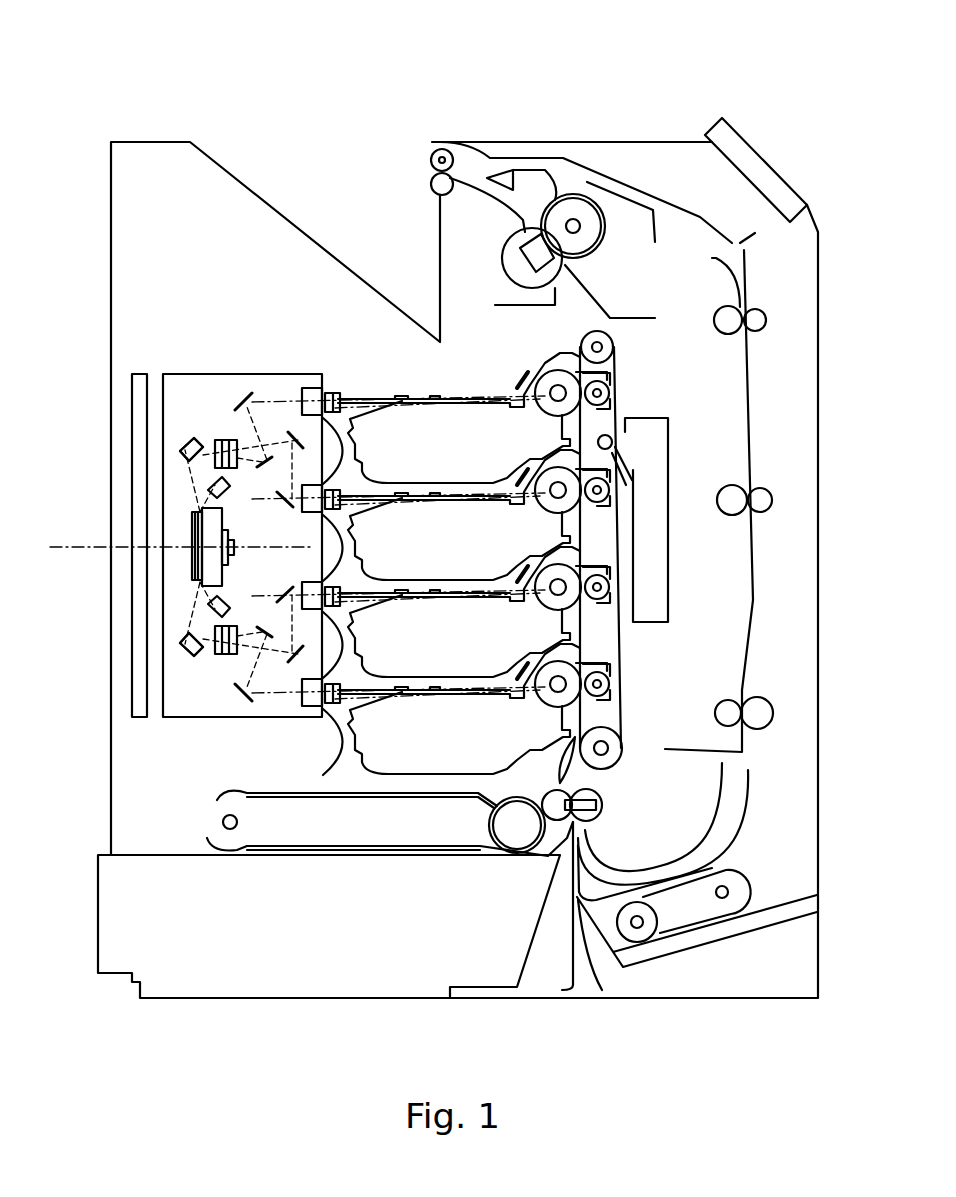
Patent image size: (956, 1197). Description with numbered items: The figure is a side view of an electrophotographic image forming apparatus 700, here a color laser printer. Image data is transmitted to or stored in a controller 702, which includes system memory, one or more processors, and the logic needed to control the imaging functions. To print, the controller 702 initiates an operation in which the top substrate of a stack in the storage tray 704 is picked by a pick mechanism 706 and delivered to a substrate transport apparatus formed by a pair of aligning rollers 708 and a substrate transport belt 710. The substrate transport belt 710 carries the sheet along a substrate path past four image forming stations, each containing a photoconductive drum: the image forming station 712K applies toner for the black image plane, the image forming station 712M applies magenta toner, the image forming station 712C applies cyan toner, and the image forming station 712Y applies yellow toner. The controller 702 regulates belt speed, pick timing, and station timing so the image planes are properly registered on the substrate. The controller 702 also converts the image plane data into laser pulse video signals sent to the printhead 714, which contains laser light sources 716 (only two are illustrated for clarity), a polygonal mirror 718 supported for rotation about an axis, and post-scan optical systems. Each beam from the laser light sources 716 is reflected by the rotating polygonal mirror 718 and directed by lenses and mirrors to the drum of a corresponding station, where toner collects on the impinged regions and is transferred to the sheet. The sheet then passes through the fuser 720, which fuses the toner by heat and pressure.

The electrophotographic image forming apparatus 700 is at (152, 36).
The controller 702 is at (148, 430).
The storage tray 704 is at (130, 903).
The pick mechanism 706 is at (506, 837).
The aligning rollers 708 is at (585, 795).
The substrate transport belt 710 is at (622, 668).
The image forming station 712K is at (630, 398).
The image forming station 712M is at (600, 520).
The image forming station 712C is at (600, 607).
The image forming station 712Y is at (595, 705).
The printhead 714 is at (283, 382).
The laser light sources 716 is at (236, 510).
The polygonal mirror 718 is at (192, 572).
The fuser 720 is at (615, 255).